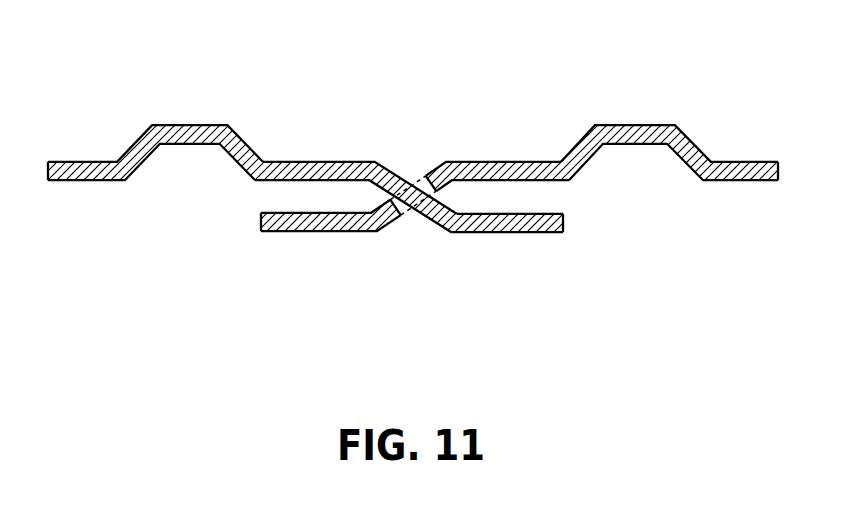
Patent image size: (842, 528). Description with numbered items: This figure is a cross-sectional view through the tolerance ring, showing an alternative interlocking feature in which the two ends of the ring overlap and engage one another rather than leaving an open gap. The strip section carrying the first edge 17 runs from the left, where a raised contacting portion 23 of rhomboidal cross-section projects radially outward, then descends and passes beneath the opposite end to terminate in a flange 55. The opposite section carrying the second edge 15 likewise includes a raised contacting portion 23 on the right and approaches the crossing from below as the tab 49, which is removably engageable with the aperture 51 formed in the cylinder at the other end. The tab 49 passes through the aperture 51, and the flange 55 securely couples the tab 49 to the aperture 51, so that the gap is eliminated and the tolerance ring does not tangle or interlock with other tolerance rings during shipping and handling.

The second edge 15 is at (504, 161).
The first edge 17 is at (303, 161).
The contacting portion 23 is at (180, 125).
The tab 49 is at (428, 212).
The aperture 51 is at (421, 188).
The flange 55 is at (500, 232).